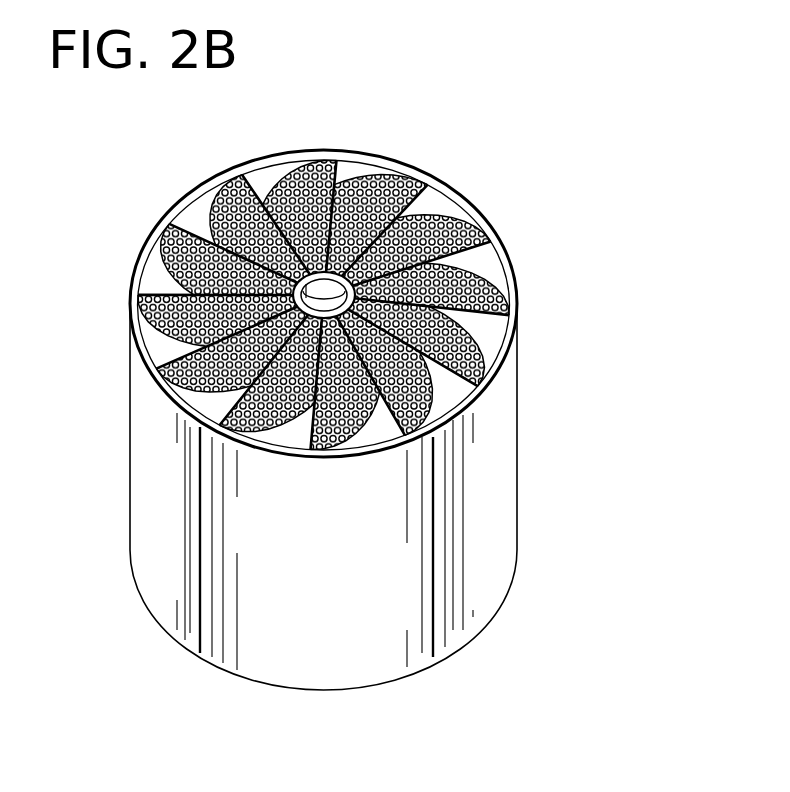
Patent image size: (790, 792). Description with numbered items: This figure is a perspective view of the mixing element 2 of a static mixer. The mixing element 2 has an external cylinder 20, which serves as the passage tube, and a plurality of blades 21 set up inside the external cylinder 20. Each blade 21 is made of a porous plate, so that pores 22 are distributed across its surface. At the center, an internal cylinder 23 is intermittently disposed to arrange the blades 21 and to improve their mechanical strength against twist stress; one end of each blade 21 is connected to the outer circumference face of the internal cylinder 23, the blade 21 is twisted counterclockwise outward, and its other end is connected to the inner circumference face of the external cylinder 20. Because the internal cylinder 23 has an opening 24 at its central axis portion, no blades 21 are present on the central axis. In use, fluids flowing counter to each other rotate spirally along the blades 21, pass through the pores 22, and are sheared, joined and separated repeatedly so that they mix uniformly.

The mixing element 2 is at (566, 249).
The external cylinder 20 is at (170, 511).
The blades 21 is at (440, 212).
The pores 22 is at (308, 152).
The internal cylinder 23 is at (160, 250).
The opening 24 is at (208, 205).